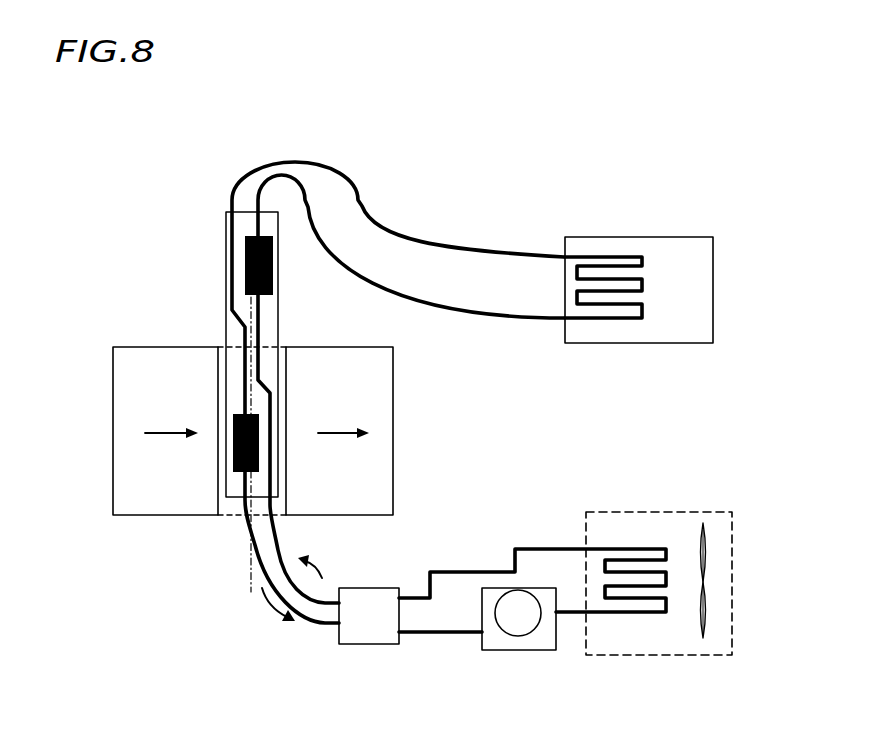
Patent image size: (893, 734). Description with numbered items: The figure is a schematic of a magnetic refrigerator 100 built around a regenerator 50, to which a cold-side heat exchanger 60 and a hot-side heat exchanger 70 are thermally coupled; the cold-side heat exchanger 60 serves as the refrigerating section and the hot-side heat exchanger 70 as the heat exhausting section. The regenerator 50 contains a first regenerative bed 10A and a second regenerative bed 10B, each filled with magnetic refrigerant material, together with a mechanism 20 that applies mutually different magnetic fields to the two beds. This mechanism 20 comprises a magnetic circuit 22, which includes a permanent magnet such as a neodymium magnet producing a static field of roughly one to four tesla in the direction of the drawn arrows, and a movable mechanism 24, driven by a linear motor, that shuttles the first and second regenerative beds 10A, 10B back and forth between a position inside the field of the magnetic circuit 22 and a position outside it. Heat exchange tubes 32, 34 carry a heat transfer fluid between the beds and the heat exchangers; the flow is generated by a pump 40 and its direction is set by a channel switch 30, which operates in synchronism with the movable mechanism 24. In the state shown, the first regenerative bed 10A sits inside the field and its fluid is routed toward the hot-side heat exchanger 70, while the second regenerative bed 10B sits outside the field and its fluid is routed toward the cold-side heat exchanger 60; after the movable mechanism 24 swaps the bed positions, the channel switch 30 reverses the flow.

The magnetic refrigerator 100 is at (629, 153).
The regenerator 50 is at (162, 177).
The cold-side heat exchanger 60 is at (658, 236).
The first regenerative bed 10A is at (235, 414).
The second regenerative bed 10B is at (247, 267).
The mechanism for applying magnetic fields 20 is at (53, 315).
The magnetic circuit 22 is at (117, 392).
The movable mechanism 24 is at (227, 333).
The channel switch 30 is at (370, 644).
The heat exchange tube 32 is at (308, 620).
The heat exchange tube 34 is at (318, 593).
The pump 40 is at (507, 650).
The hot-side heat exchanger 70 is at (673, 510).